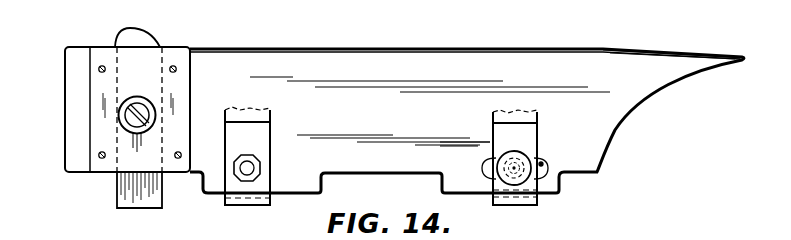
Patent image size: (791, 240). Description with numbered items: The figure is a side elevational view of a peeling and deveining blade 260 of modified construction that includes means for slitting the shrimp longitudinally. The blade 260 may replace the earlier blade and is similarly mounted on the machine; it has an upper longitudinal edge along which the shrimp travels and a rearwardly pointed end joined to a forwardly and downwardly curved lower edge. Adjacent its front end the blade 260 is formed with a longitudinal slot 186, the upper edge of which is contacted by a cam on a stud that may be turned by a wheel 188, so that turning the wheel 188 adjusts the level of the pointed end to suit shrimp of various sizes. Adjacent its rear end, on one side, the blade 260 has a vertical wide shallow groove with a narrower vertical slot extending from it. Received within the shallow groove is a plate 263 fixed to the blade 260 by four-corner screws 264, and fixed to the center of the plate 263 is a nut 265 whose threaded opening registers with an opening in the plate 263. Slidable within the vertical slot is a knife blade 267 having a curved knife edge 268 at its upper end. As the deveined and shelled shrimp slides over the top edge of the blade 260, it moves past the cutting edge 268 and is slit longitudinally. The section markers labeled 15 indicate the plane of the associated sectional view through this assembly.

The blade 260 is at (476, 32).
The curved knife edge 268 is at (148, 38).
The four-corner screws 264 is at (176, 66).
The nut 265 is at (147, 88).
The knife blade 267 is at (140, 200).
The plate 263 is at (173, 165).
The longitudinal slot 186 is at (542, 160).
The wheel 188 is at (506, 153).
The section line 15- 15 is at (61, 113).